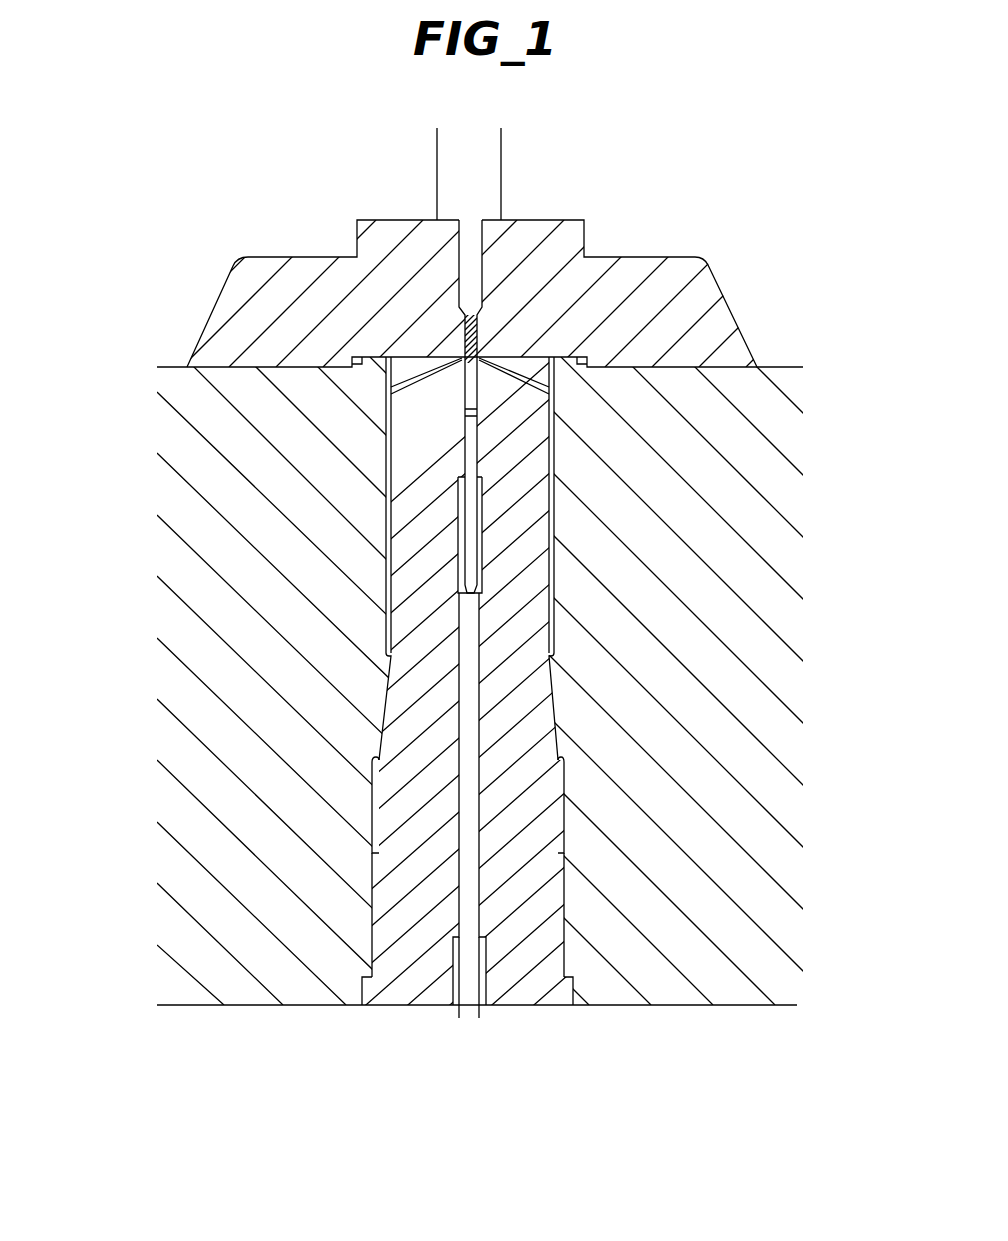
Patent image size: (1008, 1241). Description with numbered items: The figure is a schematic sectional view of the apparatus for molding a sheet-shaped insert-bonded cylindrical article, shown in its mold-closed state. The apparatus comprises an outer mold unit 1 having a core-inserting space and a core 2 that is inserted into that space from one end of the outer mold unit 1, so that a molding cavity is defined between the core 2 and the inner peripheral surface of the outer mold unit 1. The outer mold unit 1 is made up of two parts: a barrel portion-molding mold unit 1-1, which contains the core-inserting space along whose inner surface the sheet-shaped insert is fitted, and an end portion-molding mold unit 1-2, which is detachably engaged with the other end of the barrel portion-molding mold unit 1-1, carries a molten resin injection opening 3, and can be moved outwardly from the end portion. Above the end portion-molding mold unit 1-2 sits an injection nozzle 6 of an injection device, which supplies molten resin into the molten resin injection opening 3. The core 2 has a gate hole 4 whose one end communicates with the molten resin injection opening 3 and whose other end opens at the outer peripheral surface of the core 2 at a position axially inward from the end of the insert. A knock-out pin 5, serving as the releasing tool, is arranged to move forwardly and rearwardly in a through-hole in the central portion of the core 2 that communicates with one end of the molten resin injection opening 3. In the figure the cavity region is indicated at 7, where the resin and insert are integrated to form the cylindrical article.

The outer mold unit 1 is at (504, 612).
The barrel portion-molding mold unit 1-1 is at (203, 408).
The end portion-molding mold unit 1-2 is at (220, 313).
The core 2 is at (522, 702).
The molten resin injection opening 3 is at (465, 252).
The gate hole 4 is at (435, 375).
The knock-out pin 5 is at (470, 832).
The injection nozzle 6 is at (482, 167).
The outlet channel 7 is at (477, 978).